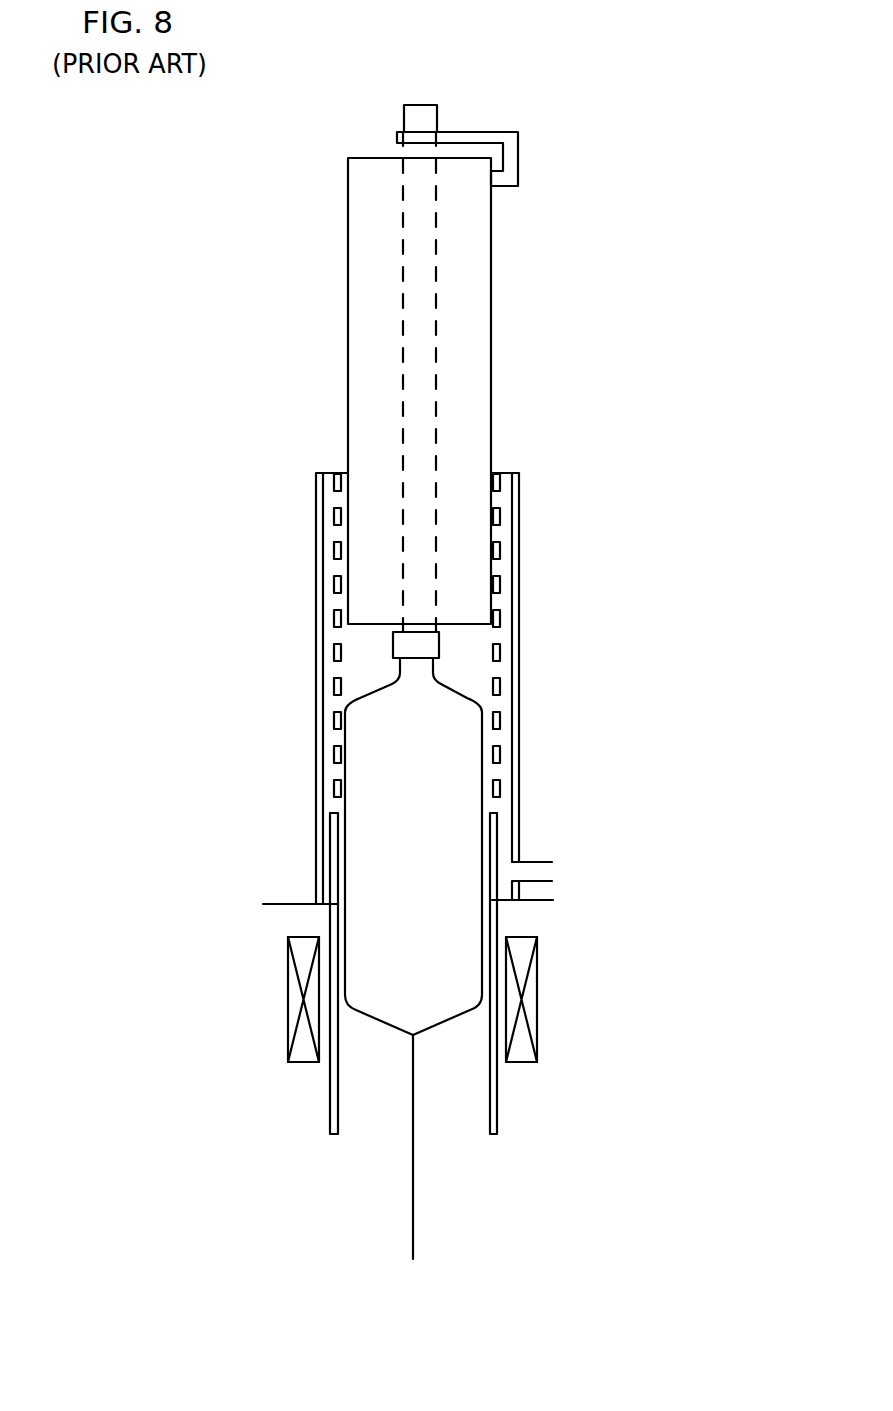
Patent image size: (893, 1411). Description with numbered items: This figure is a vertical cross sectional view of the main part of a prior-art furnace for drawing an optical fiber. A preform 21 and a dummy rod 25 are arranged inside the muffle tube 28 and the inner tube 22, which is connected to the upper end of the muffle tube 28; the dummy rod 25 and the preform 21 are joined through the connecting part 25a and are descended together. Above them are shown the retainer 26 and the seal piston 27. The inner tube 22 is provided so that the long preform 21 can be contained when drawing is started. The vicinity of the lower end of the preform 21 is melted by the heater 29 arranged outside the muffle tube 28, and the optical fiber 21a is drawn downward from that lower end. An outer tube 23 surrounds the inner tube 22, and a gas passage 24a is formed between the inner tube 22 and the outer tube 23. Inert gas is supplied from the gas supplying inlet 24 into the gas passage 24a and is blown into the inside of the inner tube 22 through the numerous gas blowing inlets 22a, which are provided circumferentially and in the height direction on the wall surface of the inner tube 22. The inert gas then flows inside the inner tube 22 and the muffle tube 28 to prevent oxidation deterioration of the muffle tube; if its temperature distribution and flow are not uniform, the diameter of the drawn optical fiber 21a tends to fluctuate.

The preform 21 is at (453, 750).
The optical fiber 21a is at (412, 1193).
The inner tube 22 is at (333, 652).
The gas blowing inlet 22a is at (336, 706).
The outer tube 23 is at (316, 795).
The gas supplying inlet 24 is at (538, 875).
The gas passage 24a is at (322, 862).
The dummy rod 25 is at (437, 113).
The connecting part 25a is at (415, 641).
The retainer 26 is at (520, 153).
The seal piston 27 is at (492, 277).
The muffle tube 28 is at (492, 1093).
The heater 29 is at (533, 1003).